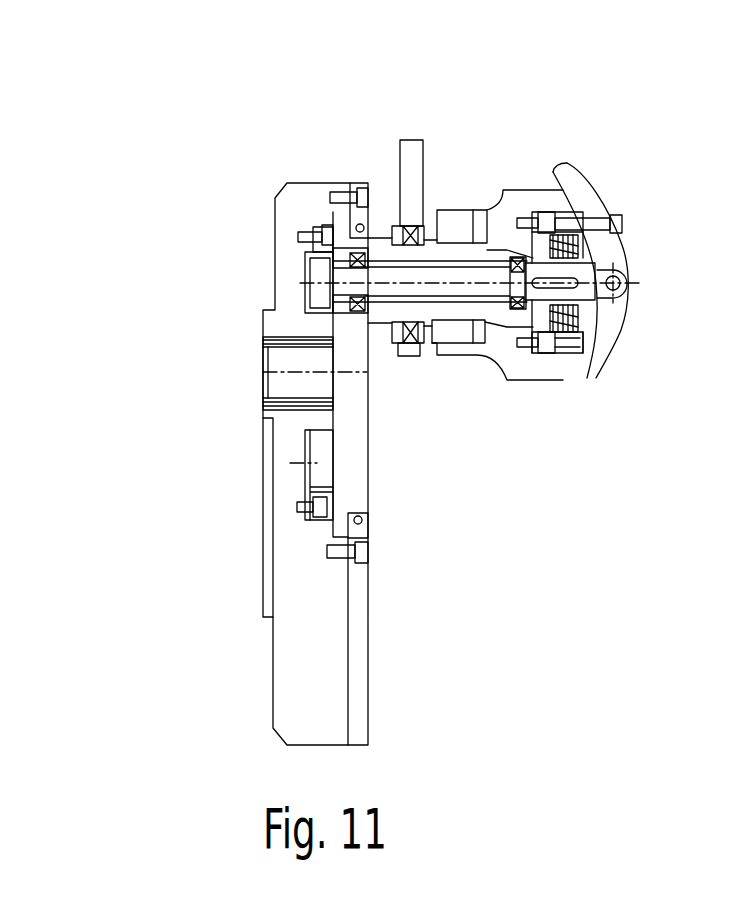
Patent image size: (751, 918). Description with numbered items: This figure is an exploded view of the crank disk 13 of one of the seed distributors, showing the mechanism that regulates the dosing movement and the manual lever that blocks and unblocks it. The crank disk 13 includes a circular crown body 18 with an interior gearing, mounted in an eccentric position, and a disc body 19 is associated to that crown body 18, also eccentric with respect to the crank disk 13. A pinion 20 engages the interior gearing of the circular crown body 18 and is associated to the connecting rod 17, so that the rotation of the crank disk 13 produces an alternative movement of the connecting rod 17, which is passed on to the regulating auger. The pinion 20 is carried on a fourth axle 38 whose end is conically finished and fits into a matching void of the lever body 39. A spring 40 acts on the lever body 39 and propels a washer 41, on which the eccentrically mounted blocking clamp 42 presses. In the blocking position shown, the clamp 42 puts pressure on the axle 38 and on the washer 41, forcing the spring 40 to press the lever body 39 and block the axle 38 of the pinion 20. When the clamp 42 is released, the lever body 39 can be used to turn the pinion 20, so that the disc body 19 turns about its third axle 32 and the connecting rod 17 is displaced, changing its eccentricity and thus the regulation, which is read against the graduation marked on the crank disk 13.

The crank disk 13 is at (308, 654).
The connecting rod 17 is at (408, 175).
The circular crown body 18 is at (317, 233).
The disc body 19 is at (352, 452).
The pinion 20 is at (317, 305).
The third axle 32 is at (292, 372).
The fourth axle 38 is at (453, 290).
The lever body 39 is at (503, 323).
The spring 40 is at (562, 318).
The washer 41 is at (588, 317).
The blocking clamp 42 is at (592, 192).